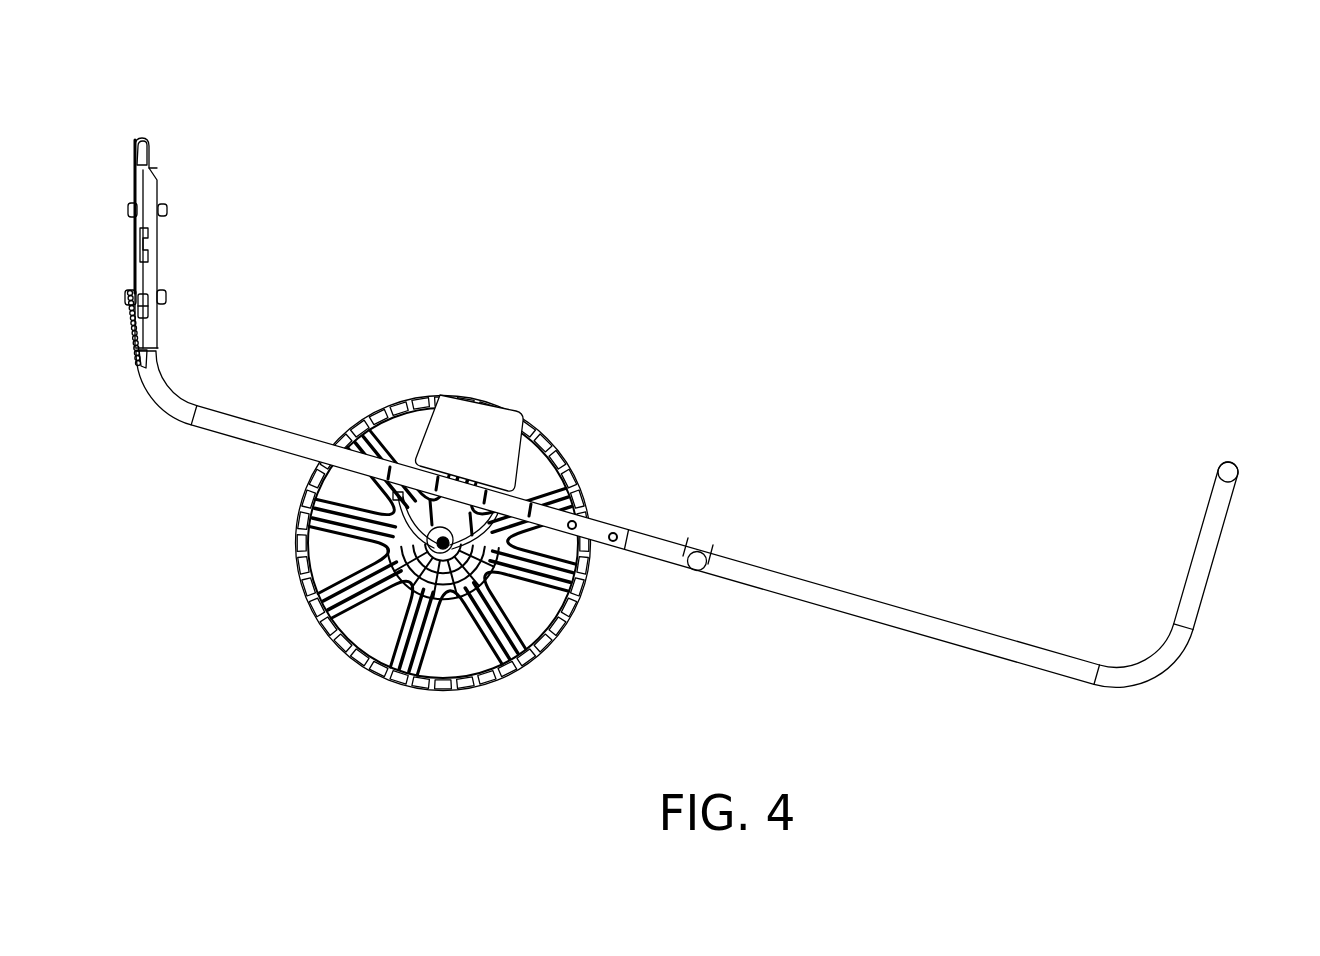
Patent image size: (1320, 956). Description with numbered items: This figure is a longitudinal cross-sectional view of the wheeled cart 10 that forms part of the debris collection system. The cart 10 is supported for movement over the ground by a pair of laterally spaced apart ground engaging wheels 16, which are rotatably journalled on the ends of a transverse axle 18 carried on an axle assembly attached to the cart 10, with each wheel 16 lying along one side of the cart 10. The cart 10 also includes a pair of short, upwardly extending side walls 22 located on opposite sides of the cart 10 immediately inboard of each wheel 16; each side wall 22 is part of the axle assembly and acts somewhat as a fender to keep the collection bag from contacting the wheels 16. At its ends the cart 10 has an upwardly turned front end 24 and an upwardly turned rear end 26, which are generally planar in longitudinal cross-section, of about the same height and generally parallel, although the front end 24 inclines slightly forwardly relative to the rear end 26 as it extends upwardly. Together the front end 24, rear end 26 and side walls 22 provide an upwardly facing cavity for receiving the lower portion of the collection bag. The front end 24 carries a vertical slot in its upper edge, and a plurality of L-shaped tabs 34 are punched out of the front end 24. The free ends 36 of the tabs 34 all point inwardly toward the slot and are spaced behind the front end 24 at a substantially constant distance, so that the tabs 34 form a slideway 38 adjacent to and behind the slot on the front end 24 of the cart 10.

The wheeled cart 10 is at (836, 484).
The ground engaging wheels 16 is at (545, 440).
The transverse axle 18 is at (582, 548).
The side walls 22 is at (470, 412).
The front end 24 is at (178, 156).
The rear end 26 is at (1222, 507).
The L-shaped tabs 34 is at (142, 228).
The free ends 36 is at (143, 243).
The slideway 38 is at (148, 122).